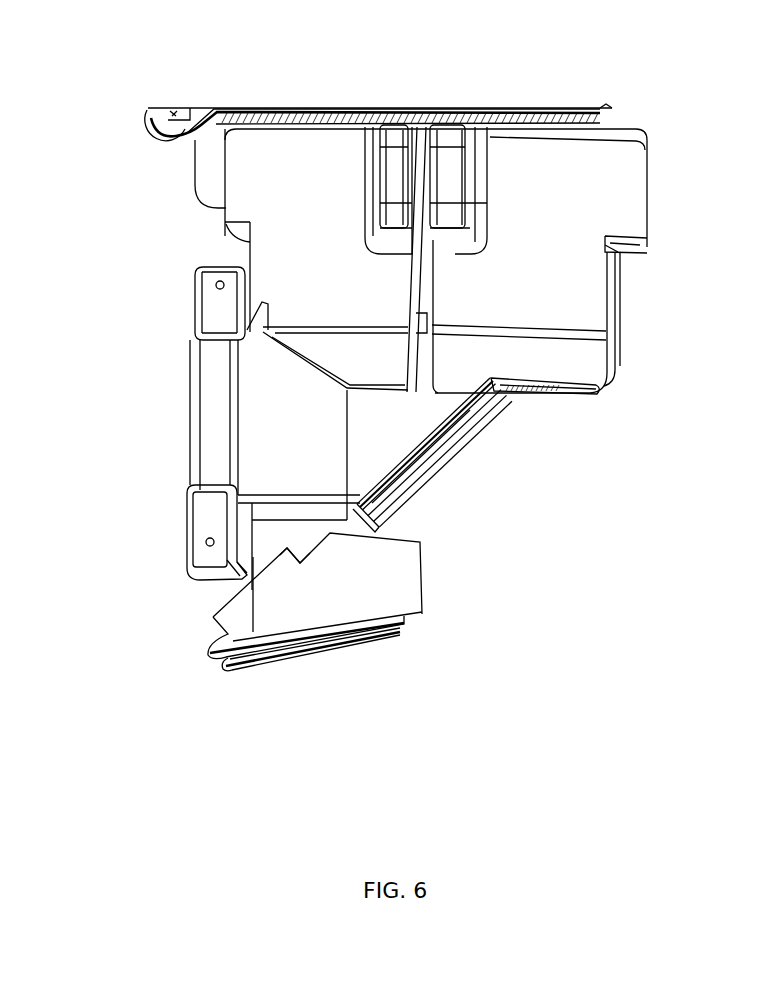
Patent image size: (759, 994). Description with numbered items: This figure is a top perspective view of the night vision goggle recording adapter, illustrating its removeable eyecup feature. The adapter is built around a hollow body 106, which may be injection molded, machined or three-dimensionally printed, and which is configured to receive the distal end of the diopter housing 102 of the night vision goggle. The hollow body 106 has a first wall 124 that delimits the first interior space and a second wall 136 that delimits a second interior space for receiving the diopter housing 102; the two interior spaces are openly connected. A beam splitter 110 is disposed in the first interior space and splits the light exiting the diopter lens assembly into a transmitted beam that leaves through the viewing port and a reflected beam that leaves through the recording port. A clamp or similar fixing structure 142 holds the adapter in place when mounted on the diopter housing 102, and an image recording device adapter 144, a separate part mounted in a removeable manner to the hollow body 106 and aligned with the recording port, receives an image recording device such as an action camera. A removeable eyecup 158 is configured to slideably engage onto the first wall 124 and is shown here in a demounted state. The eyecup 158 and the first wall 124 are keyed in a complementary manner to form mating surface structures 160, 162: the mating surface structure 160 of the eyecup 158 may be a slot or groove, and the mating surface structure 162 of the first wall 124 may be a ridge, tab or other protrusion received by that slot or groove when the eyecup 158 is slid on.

The diopter housing 102 is at (597, 122).
The hollow body 106 is at (647, 208).
The second wall 136 is at (637, 247).
The fixing structure 142 is at (373, 175).
The first wall 124 is at (497, 390).
The beam splitter 110 is at (447, 448).
The mating surface structure 162 is at (422, 448).
The removeable eyecup 158 is at (405, 587).
The image recording device adapter 144 is at (203, 513).
The mating surface structure 160 is at (297, 548).